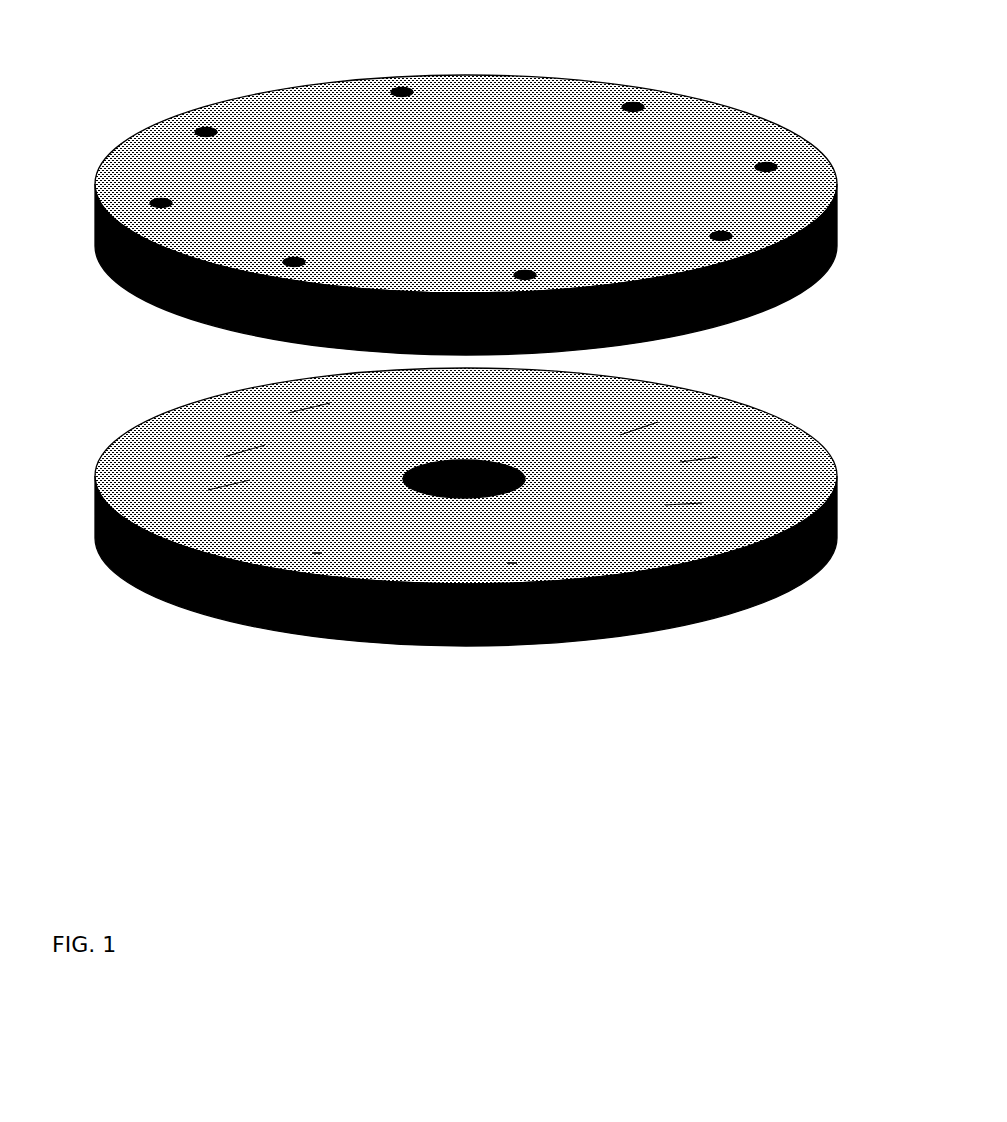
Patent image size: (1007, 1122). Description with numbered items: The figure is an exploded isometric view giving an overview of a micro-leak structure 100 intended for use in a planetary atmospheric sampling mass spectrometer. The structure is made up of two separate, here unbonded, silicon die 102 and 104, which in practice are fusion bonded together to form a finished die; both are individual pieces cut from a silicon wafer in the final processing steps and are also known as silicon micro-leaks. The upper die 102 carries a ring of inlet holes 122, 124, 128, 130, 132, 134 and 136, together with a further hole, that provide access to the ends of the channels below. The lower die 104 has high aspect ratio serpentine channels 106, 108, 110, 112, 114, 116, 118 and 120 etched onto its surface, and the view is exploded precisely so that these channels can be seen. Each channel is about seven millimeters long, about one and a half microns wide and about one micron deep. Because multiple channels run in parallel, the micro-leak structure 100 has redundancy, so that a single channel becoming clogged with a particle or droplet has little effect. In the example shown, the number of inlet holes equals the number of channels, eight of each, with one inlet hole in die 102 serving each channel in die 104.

The micro-leak structure 100 is at (752, 914).
The die 102 is at (130, 213).
The die 104 is at (130, 510).
The channel 106 is at (658, 422).
The channel 108 is at (718, 457).
The channel 110 is at (702, 503).
The channel 112 is at (512, 563).
The channel 114 is at (317, 553).
The channel 116 is at (208, 490).
The channel 118 is at (224, 457).
The channel 120 is at (288, 413).
The inlet hole 122 is at (162, 188).
The inlet hole 124 is at (203, 120).
The inlet hole 128 is at (632, 95).
The inlet hole 130 is at (765, 157).
The inlet hole 132 is at (718, 225).
The inlet hole 134 is at (520, 265).
The inlet hole 136 is at (293, 248).